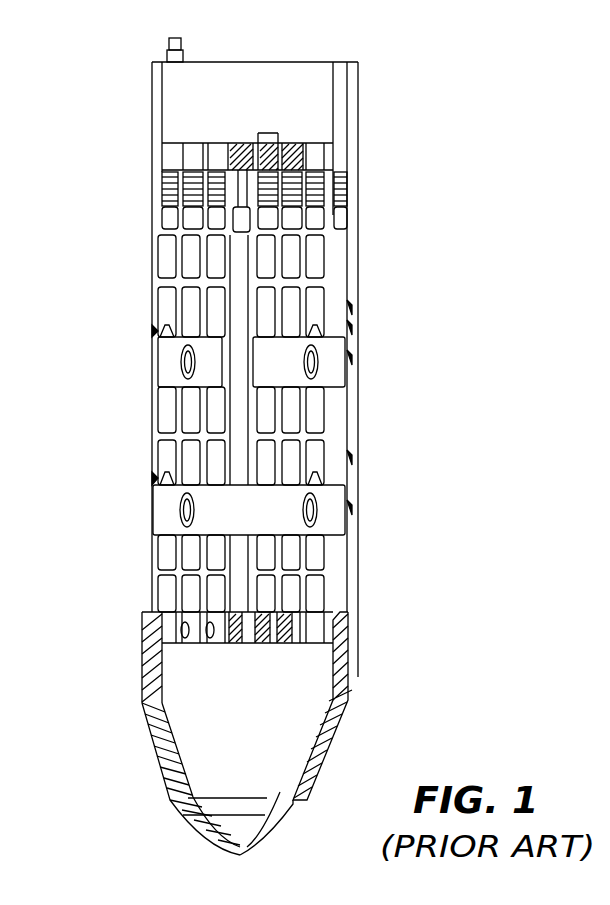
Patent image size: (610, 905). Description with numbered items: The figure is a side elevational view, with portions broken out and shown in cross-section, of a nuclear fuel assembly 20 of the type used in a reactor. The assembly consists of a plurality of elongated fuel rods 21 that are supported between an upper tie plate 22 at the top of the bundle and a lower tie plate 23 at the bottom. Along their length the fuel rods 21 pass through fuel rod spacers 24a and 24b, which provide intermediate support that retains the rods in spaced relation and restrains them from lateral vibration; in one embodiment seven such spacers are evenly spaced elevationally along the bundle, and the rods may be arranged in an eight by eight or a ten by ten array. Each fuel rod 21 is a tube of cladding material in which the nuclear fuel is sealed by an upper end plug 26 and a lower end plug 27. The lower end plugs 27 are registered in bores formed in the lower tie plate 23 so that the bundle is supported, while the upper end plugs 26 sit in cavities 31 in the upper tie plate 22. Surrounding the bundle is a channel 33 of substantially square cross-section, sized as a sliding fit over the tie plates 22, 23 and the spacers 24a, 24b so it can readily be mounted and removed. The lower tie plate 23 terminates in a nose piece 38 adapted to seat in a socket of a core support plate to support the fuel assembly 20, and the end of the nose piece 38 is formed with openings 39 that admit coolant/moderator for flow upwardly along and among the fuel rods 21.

The nuclear fuel assembly 20 is at (376, 102).
The fuel rods 21 is at (352, 302).
The upper tie plate 22 is at (162, 171).
The lower tie plate 23 is at (148, 632).
The fuel rod spacer 24a is at (352, 536).
The fuel rod spacer 24b is at (350, 390).
The upper end plugs 26 is at (297, 227).
The lower end plugs 27 is at (287, 612).
The cavities 31 is at (303, 160).
The channel 33 is at (352, 487).
The nose piece 38 is at (342, 740).
The openings 39 is at (180, 819).